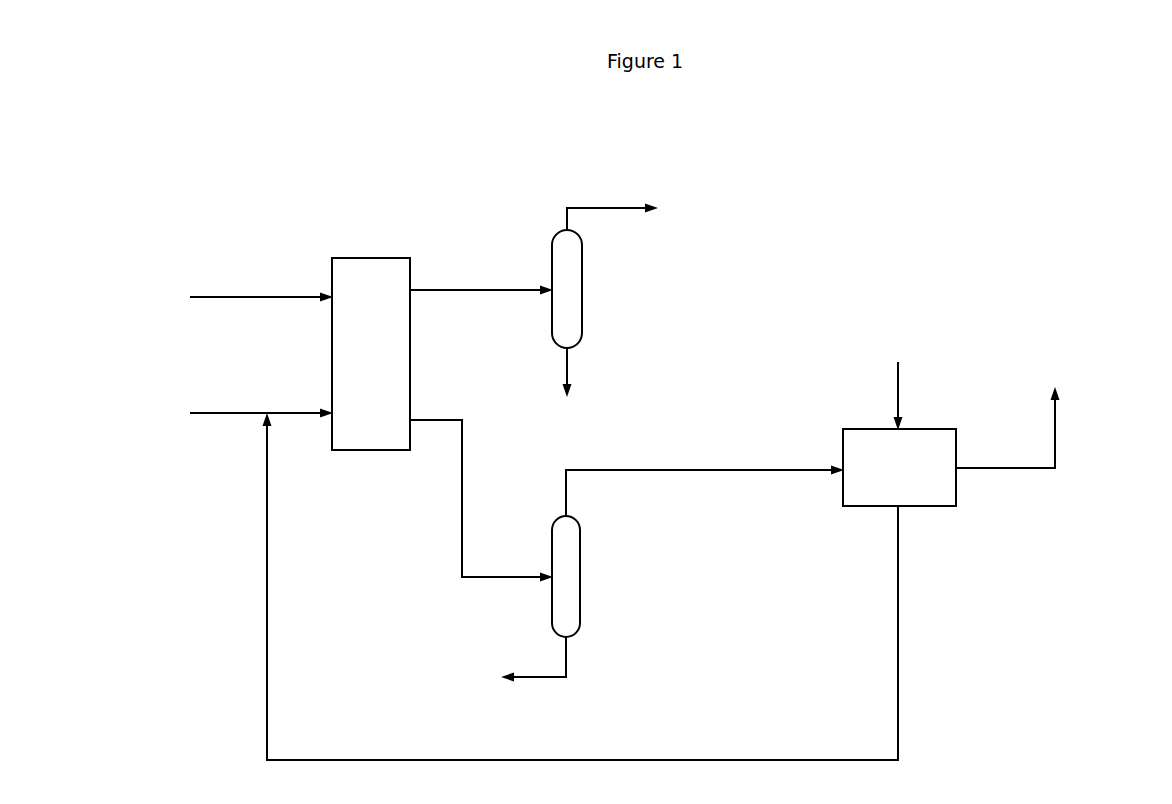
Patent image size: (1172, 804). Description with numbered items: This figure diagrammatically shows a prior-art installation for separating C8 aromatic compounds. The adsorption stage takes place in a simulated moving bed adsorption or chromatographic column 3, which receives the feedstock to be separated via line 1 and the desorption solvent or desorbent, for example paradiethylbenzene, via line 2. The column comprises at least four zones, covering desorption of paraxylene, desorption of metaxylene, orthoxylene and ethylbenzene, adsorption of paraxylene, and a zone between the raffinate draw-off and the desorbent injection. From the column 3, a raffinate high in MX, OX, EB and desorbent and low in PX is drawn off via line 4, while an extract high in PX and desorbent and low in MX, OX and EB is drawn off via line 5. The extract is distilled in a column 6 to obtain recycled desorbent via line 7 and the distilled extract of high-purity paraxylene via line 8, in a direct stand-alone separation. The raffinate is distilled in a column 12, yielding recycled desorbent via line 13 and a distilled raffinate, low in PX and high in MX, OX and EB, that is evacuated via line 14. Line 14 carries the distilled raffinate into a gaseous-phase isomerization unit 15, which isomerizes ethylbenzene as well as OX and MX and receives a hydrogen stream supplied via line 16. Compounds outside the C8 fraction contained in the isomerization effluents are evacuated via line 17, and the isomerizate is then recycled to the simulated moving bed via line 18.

The line 1 is at (241, 413).
The line 2 is at (261, 296).
The simulated moving bed adsorption column 3 is at (332, 352).
The line 4 is at (462, 504).
The line 5 is at (483, 289).
The column 6 is at (552, 318).
The line 7 is at (570, 368).
The line 8 is at (611, 210).
The column 12 is at (580, 575).
The line 13 is at (547, 678).
The line 14 is at (697, 468).
The isomerization unit 15 is at (843, 493).
The line 16 is at (903, 384).
The line 17 is at (1058, 442).
The line 18 is at (898, 604).